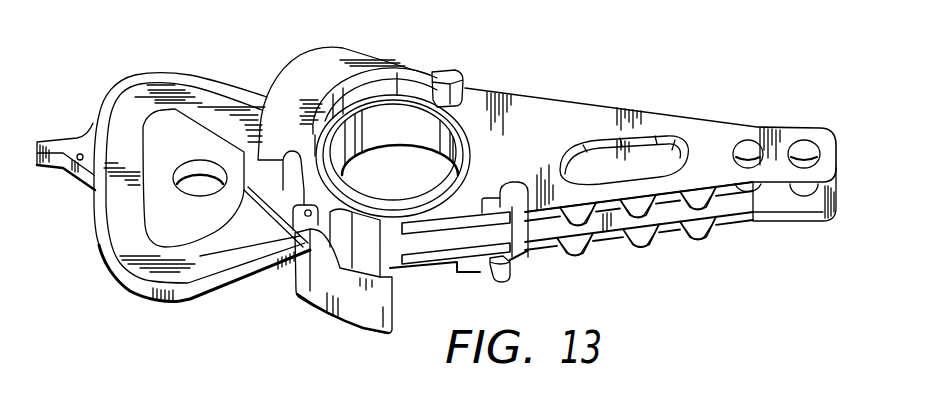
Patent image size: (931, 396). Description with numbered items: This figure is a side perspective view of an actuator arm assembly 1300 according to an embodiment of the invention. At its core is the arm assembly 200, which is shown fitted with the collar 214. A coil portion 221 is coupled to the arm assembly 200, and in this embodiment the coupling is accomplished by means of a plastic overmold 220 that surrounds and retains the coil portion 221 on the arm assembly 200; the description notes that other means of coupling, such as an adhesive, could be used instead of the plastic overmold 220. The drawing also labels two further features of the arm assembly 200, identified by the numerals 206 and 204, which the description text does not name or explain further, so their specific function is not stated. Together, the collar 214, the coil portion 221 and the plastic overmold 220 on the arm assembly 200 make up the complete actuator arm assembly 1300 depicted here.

The actuator arm assembly 1300 is at (122, 60).
The plastic overmold 220 is at (218, 85).
The coil portion 221 is at (197, 252).
The collar 214 is at (437, 118).
The arm assembly 200 is at (757, 121).
The slot 206 is at (690, 118).
The lower rail 204 is at (733, 224).